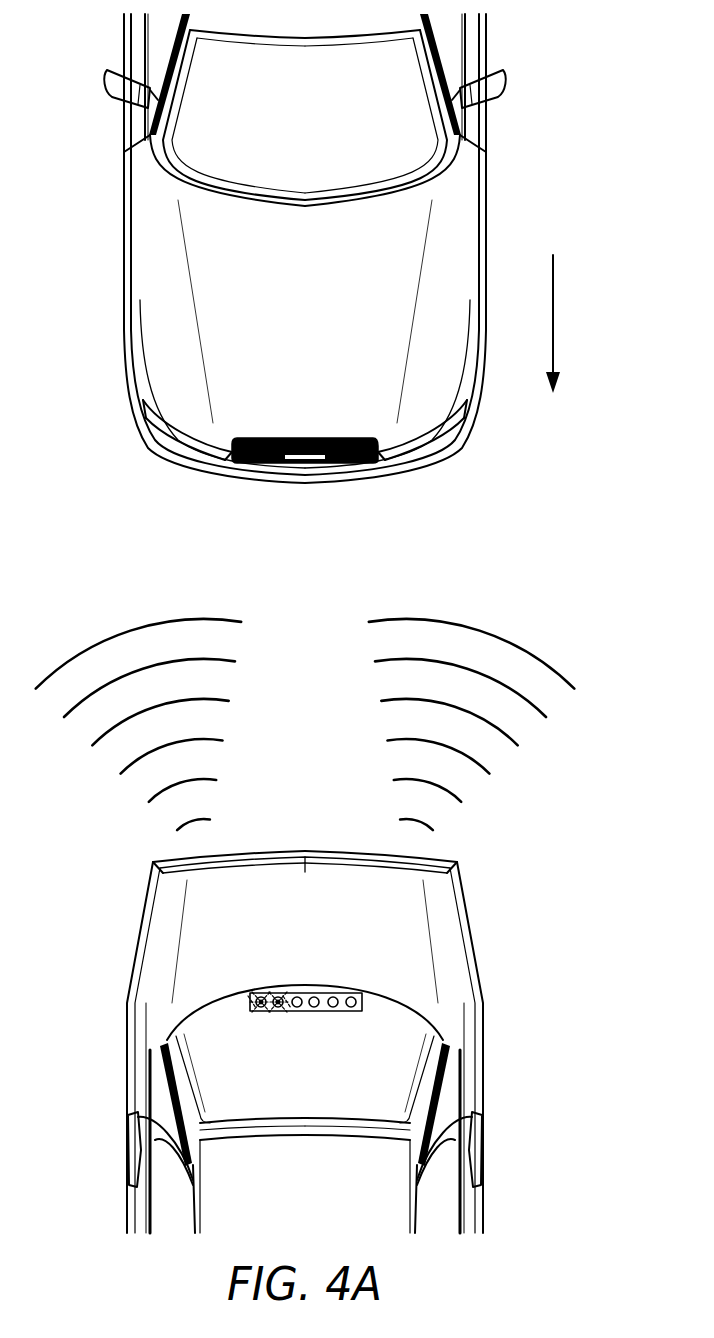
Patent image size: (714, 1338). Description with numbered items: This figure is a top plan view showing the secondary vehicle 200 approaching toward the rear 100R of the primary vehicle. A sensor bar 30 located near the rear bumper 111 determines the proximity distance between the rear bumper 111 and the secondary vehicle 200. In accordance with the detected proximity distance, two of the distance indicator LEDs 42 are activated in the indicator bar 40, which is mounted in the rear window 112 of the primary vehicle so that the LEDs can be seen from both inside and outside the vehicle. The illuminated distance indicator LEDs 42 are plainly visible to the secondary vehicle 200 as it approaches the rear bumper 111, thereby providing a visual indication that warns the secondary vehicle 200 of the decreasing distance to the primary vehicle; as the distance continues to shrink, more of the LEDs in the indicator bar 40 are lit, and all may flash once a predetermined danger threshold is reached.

The secondary vehicle 200 is at (487, 176).
The rear of the primary vehicle 100R is at (450, 856).
The rear bumper 111 is at (362, 851).
The sensor bar 30 is at (290, 856).
The rear window 112 is at (205, 1033).
The indicator bar 40 is at (355, 992).
The distance indicator LEDs 42 is at (262, 996).